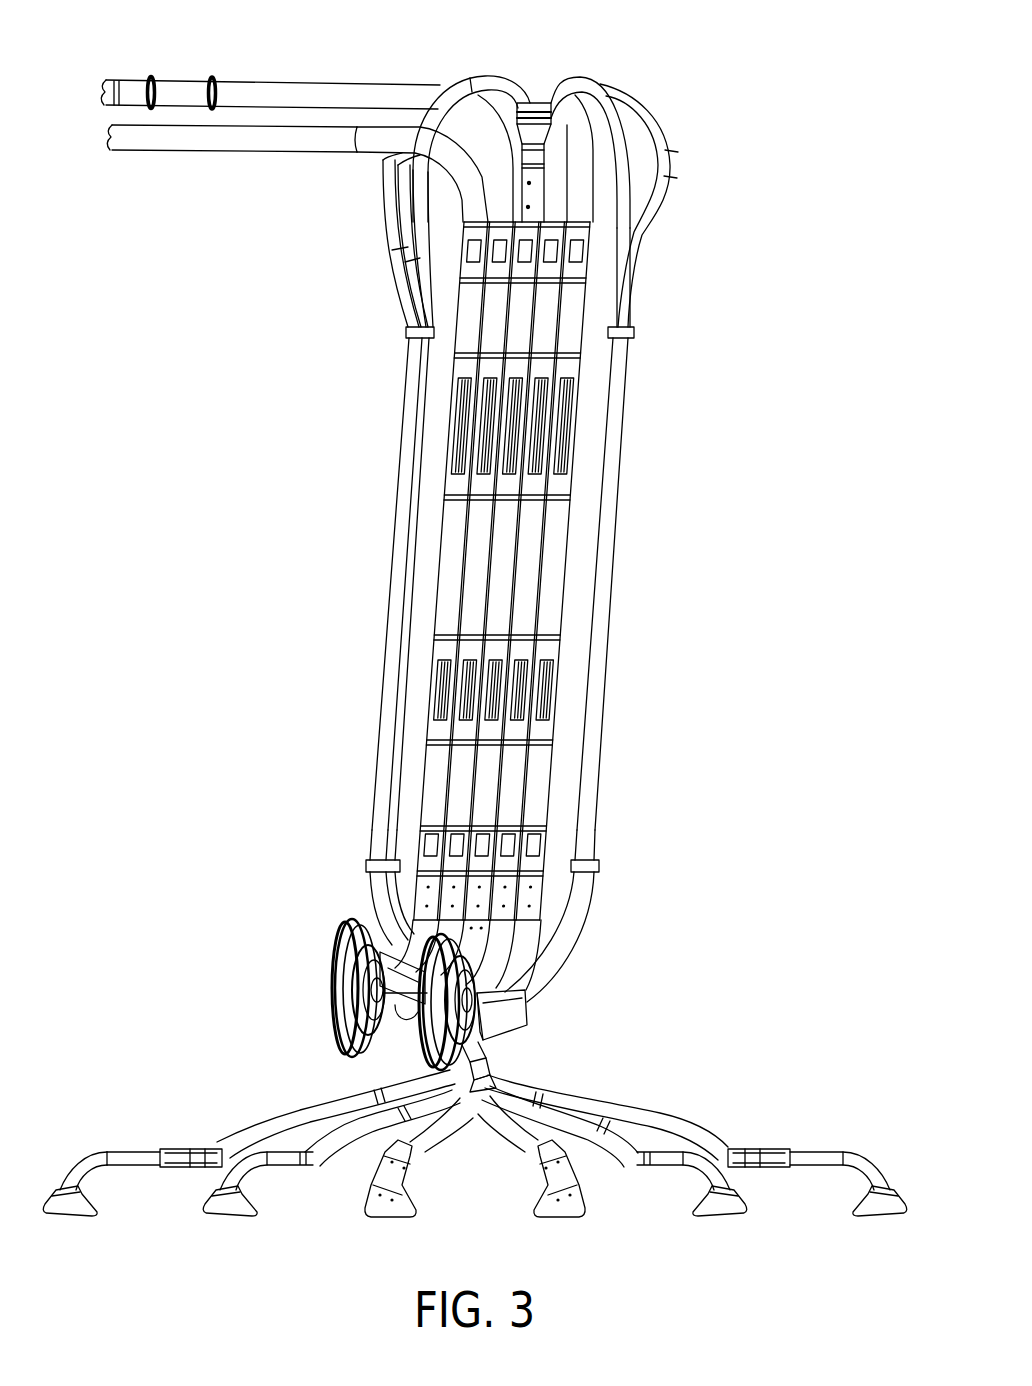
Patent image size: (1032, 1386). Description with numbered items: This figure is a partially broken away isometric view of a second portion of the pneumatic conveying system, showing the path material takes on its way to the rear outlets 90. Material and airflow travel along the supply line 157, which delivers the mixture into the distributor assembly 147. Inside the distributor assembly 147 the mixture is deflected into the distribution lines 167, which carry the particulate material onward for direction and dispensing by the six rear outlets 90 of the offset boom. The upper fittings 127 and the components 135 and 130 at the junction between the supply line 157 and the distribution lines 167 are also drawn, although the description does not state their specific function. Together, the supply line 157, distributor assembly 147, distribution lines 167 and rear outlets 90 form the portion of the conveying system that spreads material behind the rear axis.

The hose connector 127 is at (548, 70).
The connector plate 135 is at (417, 960).
The supply line 157 is at (478, 900).
The manifold block 130 is at (510, 1015).
The distributor assembly 147 is at (504, 1050).
The distribution line 167 is at (267, 1130).
The rear outlet 90 is at (212, 1198).